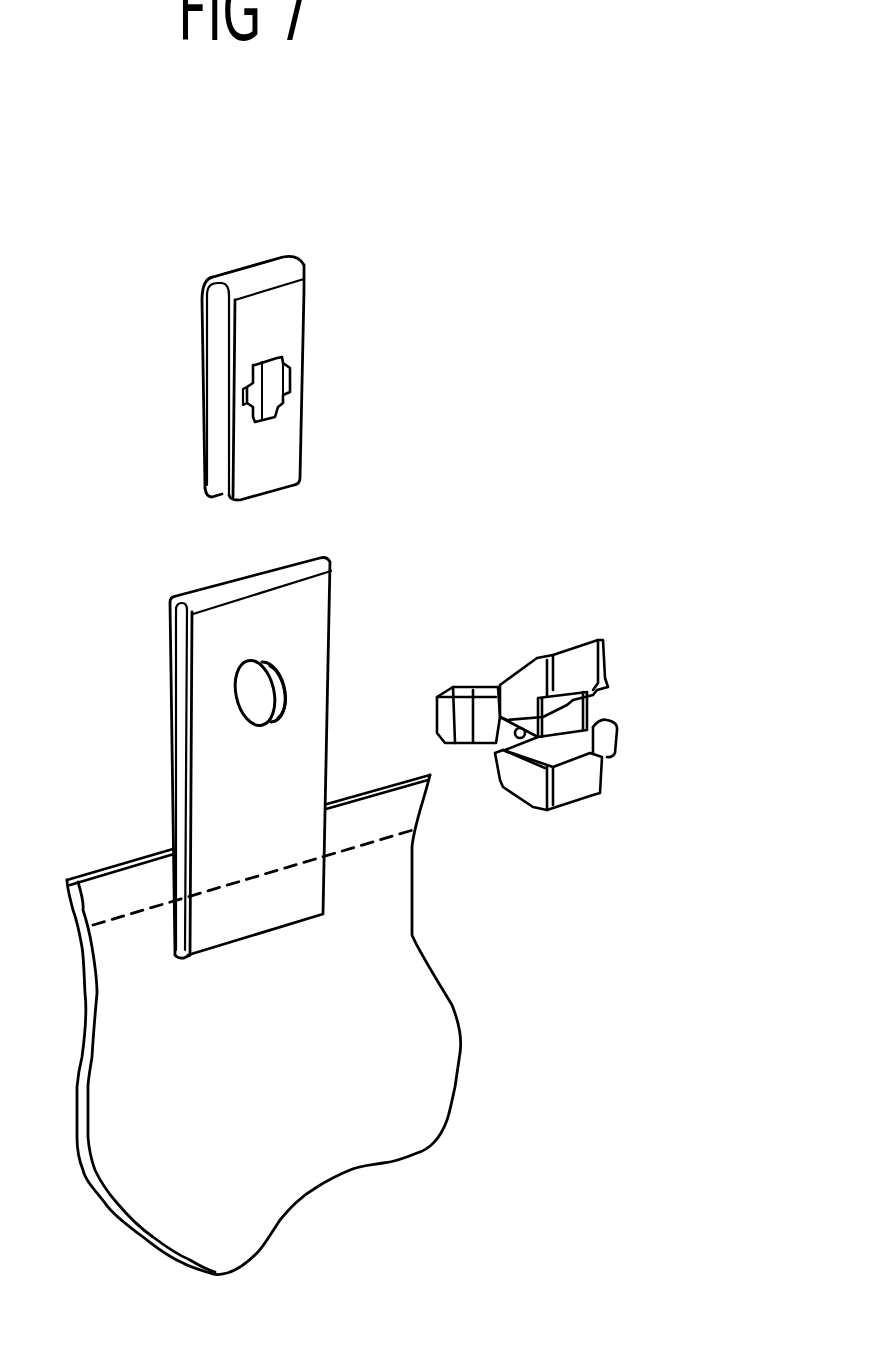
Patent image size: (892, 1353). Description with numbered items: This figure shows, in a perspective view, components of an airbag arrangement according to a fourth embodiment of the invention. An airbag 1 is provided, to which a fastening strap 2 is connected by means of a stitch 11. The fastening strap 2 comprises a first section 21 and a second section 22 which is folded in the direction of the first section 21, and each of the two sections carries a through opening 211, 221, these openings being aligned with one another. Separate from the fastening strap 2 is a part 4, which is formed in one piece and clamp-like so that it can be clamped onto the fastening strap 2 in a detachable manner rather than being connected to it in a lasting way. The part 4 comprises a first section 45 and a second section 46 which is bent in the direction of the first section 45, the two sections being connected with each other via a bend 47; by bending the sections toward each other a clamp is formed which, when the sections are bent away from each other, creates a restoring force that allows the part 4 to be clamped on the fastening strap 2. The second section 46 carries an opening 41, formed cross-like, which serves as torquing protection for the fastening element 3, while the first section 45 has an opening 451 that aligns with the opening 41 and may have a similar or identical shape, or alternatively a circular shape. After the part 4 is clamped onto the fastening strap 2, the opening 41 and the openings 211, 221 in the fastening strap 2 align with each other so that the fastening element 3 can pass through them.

The airbag 1 is at (133, 1230).
The stitch 11 is at (133, 912).
The fastening strap 2 is at (216, 577).
The first section 21 is at (173, 635).
The second section 22 is at (310, 669).
The through opening 211 is at (262, 684).
The through opening 221 is at (283, 698).
The fastening element 3 is at (630, 695).
The part 4 is at (303, 258).
The opening 41 is at (293, 380).
The first section 45 is at (207, 323).
The opening 451 is at (243, 405).
The second section 46 is at (285, 320).
The bend 47 is at (255, 272).